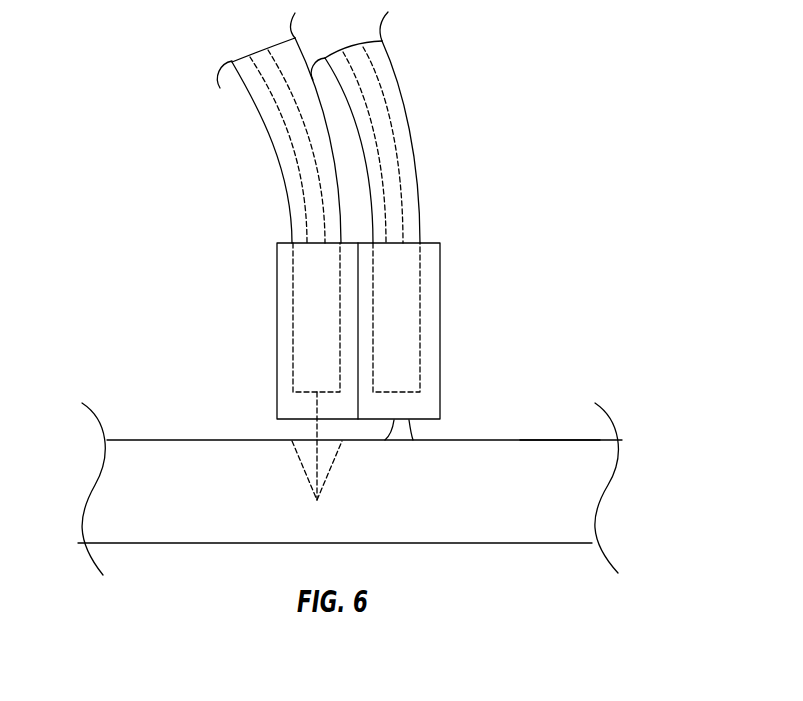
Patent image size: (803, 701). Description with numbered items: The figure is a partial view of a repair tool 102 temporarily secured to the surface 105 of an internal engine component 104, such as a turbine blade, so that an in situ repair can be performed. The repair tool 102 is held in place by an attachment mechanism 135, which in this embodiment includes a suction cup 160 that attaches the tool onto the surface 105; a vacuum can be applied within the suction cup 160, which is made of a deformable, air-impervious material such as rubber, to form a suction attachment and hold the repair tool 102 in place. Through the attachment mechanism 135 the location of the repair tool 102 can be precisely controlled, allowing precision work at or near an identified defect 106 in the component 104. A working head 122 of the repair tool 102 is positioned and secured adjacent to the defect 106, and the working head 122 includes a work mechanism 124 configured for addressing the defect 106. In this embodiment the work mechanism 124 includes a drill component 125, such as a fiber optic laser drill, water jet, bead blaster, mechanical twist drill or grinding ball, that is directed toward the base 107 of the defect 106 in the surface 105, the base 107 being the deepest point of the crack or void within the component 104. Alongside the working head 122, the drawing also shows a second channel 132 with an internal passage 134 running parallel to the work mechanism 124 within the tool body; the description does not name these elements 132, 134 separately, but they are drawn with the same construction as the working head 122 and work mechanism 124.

The repair tool 102 is at (231, 285).
The internal engine component 104 is at (190, 532).
The surface 105 is at (150, 440).
The defect 106 is at (333, 463).
The base 107 is at (317, 500).
The working head 122 is at (277, 272).
The work mechanism 124 is at (313, 343).
The drill component 125 is at (317, 433).
The second tube 132 is at (440, 244).
The second lumen 134 is at (440, 295).
The attachment mechanism 135 is at (540, 399).
The suction cup 160 is at (399, 430).